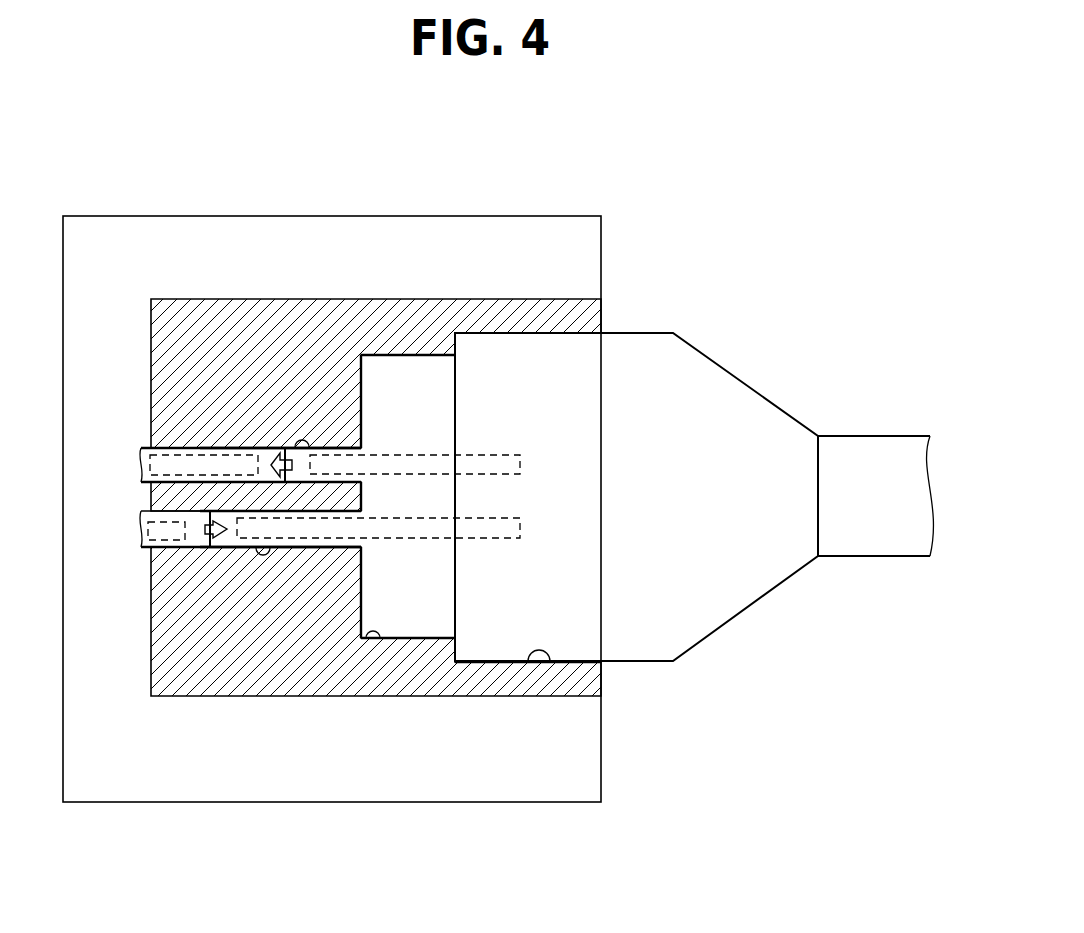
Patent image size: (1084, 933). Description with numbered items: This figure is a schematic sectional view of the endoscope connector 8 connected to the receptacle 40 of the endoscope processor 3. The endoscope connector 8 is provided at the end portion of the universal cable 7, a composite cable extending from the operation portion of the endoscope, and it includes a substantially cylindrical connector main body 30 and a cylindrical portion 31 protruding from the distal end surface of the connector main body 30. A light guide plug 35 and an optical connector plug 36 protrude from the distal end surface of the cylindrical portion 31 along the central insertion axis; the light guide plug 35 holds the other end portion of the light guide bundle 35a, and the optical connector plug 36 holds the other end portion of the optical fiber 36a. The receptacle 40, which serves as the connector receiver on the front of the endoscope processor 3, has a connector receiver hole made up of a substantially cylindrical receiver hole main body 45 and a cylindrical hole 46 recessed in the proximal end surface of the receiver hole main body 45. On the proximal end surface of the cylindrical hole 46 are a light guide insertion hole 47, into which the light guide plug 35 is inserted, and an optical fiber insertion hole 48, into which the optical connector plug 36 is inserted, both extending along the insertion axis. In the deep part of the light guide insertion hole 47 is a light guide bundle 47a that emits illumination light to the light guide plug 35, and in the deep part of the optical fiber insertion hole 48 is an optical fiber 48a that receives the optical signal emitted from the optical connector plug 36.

The endoscope processor 3 is at (510, 216).
The receptacle 40 is at (580, 298).
The optical fiber insertion hole 48 is at (296, 445).
The optical fiber 48a is at (187, 448).
The optical connector plug 36 is at (346, 447).
The optical fiber 36a is at (400, 453).
The light guide insertion hole 47 is at (262, 549).
The light guide bundle 47a is at (190, 548).
The light guide plug 35 is at (303, 548).
The light guide bundle 35a is at (438, 540).
The cylindrical portion 31 is at (398, 640).
The cylindrical hole 46 is at (373, 640).
The connector main body 30 is at (485, 664).
The receiver hole main body 45 is at (530, 663).
The endoscope connector 8 is at (733, 315).
The universal cable 7 is at (858, 436).